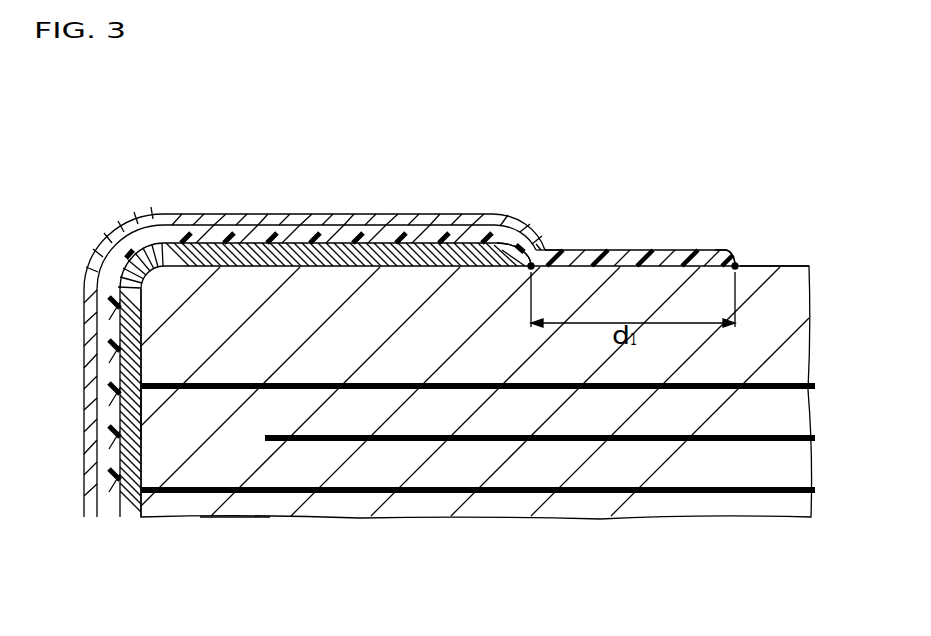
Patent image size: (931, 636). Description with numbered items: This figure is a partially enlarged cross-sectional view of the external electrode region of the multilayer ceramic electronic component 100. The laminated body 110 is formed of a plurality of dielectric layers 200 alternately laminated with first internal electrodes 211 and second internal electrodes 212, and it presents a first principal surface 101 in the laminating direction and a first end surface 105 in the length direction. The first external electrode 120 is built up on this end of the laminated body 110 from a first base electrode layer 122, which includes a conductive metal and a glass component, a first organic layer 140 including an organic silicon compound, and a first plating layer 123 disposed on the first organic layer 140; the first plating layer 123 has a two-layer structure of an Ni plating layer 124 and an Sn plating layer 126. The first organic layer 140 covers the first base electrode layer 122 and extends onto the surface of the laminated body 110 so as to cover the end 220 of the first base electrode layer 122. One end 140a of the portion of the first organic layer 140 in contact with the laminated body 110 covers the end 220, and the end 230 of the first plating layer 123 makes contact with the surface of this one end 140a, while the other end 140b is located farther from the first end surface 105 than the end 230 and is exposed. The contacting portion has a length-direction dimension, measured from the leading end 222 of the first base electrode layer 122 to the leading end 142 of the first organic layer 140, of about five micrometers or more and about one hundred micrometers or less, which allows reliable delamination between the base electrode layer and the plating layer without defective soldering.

The display device 100 is at (219, 124).
The first principal surface 101 is at (792, 263).
The first end surface 105 is at (141, 411).
The laminated body 110 is at (232, 513).
The first external electrode 120 is at (163, 212).
The first base electrode layer 122 is at (376, 252).
The first plating layer 123 is at (340, 157).
The Ni plating layer 124 is at (302, 213).
The Sn plating layer 126 is at (239, 212).
The first organic layer 140 is at (661, 256).
The one end of the first organic layer 140a is at (546, 257).
The other end of the first organic layer 140b is at (730, 262).
The leading end of the first organic layer 142 is at (738, 259).
The dielectric layers 200 is at (326, 503).
The first internal electrodes 211 is at (397, 390).
The second internal electrodes 212 is at (510, 441).
The end of the first base electrode layer 220 is at (503, 254).
The leading end of the first base electrode layer 222 is at (535, 270).
The end of the first plating layer 230 is at (540, 243).